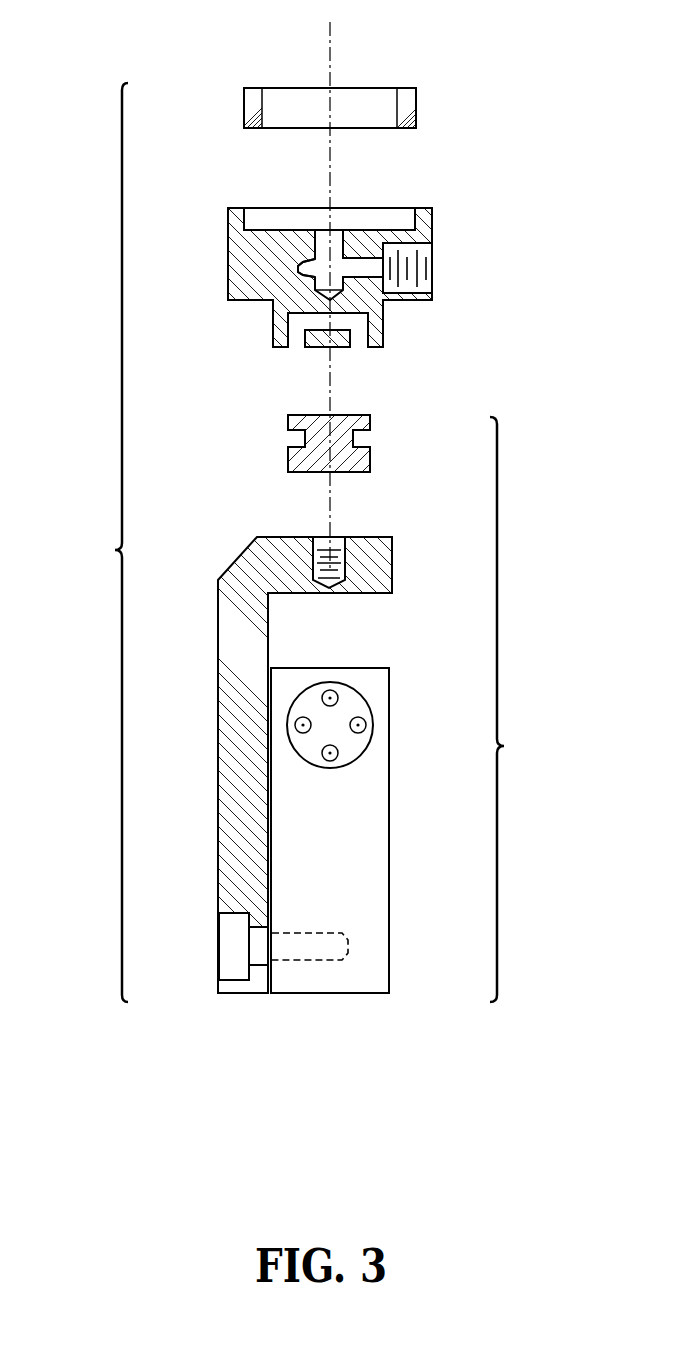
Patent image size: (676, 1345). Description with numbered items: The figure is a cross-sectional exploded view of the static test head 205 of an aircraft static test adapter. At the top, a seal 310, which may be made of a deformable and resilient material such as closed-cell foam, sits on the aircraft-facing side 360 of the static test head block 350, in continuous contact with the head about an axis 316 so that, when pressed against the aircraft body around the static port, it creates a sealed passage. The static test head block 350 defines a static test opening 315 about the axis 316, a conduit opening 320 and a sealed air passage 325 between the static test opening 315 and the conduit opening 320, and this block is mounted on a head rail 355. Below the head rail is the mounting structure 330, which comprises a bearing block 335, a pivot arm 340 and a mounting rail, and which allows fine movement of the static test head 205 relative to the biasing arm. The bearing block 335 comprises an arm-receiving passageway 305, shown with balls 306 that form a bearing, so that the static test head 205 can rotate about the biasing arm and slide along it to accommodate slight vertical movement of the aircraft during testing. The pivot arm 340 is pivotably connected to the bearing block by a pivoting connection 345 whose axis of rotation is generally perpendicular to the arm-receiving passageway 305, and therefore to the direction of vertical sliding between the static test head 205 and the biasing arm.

The static test head 205 is at (94, 542).
The arm-receiving passageway 305 is at (353, 706).
The balls 306 is at (304, 716).
The seal 310 is at (416, 109).
The static test opening 315 is at (335, 230).
The axis 316 is at (330, 57).
The conduit opening 320 is at (432, 270).
The sealed air passage 325 is at (322, 270).
The mounting structure 330 is at (392, 747).
The bearing block 335 is at (389, 826).
The pivot arm 340 is at (392, 570).
The pivoting connection 345 is at (270, 946).
The static test head block 350 is at (228, 263).
The head rail 355 is at (370, 456).
The aircraft-facing side 360 is at (238, 203).